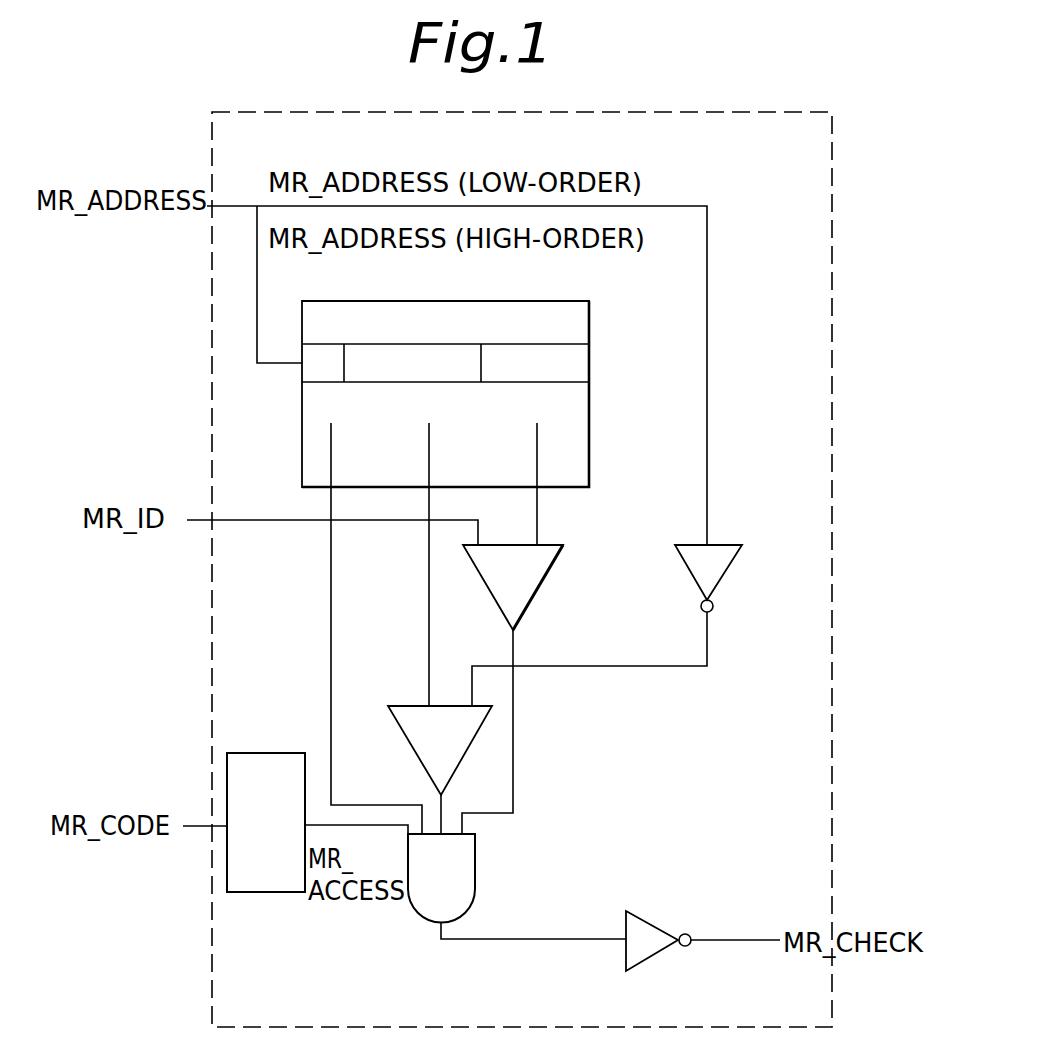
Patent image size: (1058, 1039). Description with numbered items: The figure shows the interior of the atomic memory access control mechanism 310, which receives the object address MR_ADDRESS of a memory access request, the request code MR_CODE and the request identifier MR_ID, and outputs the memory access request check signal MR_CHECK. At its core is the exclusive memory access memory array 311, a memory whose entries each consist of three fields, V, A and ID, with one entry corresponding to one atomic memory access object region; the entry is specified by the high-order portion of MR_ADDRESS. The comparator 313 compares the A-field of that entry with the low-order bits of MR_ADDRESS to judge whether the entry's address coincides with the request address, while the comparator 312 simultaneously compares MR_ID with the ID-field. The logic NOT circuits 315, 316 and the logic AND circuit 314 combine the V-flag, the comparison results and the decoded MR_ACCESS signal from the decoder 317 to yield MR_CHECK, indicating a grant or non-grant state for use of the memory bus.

The atomic memory access control mechanism 310 is at (832, 277).
The exclusive memory access memory array 311 is at (590, 330).
The comparator 312 is at (553, 577).
The comparator 313 is at (420, 766).
The logic AND circuit 314 is at (475, 857).
The logic NOT circuit 315 is at (742, 549).
The logic NOT circuit 316 is at (645, 920).
The decoder 317 is at (270, 895).